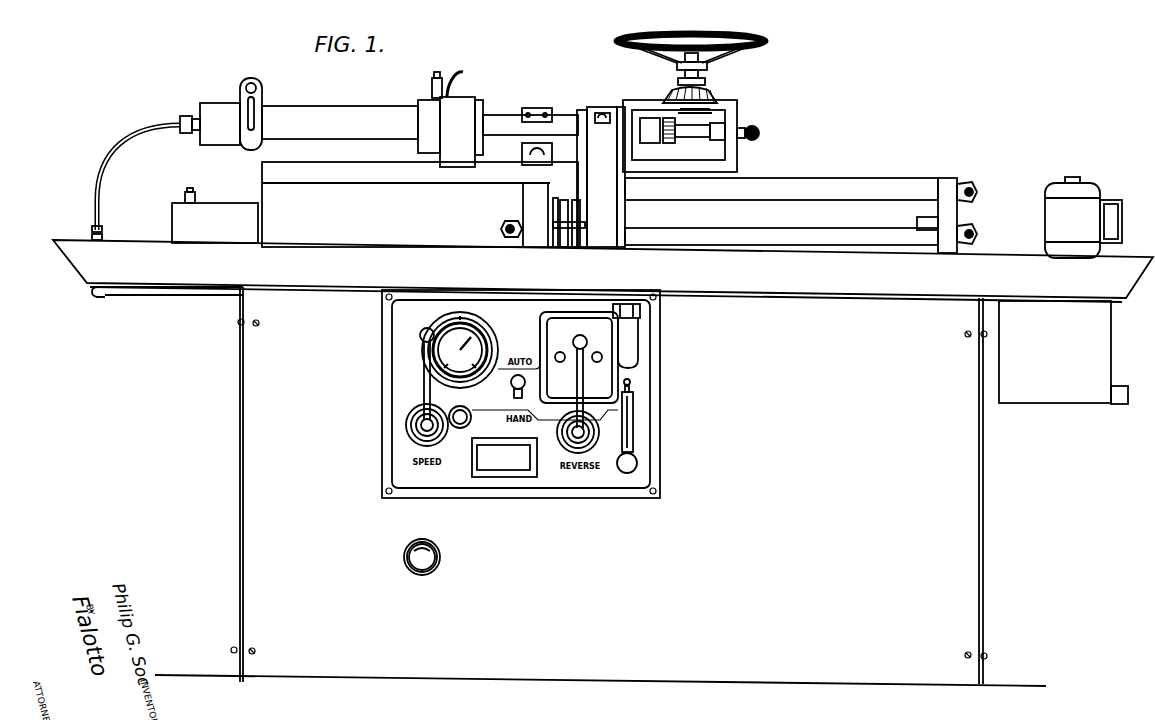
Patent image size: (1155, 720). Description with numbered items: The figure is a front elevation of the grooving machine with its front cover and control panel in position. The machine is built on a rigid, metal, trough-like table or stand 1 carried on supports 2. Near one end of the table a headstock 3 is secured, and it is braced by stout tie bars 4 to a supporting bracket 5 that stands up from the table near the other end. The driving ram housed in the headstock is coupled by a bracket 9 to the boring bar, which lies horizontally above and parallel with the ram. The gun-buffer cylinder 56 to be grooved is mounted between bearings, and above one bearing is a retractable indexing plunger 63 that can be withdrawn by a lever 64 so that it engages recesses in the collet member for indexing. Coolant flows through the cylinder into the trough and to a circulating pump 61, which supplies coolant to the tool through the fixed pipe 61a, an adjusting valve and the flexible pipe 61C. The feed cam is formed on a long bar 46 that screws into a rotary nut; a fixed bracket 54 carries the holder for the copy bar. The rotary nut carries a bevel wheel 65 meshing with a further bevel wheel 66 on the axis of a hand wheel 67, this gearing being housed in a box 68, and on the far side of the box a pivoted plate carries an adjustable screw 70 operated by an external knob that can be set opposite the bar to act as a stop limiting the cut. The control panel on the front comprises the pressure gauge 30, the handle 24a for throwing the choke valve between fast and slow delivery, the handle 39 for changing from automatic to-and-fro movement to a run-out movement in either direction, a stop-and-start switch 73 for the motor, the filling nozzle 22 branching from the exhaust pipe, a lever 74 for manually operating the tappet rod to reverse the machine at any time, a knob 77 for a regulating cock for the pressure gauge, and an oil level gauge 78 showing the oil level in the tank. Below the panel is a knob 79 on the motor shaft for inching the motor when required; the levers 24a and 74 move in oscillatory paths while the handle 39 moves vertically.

The trough-like table or stand 1 is at (603, 271).
The supports 2 is at (238, 556).
The headstock 3 is at (378, 204).
The tie bars 4 is at (820, 186).
The supporting bracket 5 is at (958, 213).
The bracket 9 is at (601, 177).
The filling nozzle 22 is at (629, 345).
The handle 24a is at (423, 333).
The pressure gauge 30 is at (486, 337).
The handle 39 is at (511, 384).
The long bar 46 is at (694, 138).
The fixed bracket 54 is at (537, 108).
The gun-buffer cylinder 56 is at (379, 122).
The circulating pump 61 is at (1083, 217).
The fixed pipe 61a is at (178, 296).
The flexible pipe 61C is at (136, 179).
The retractable indexing plunger 63 is at (432, 76).
The lever 64 is at (459, 74).
The bevel wheel 65 is at (670, 143).
The bevel wheel 66 is at (700, 106).
The hand wheel 67 is at (764, 45).
The box 68 is at (737, 110).
The adjustable screw 70 is at (760, 134).
The stop-and-start switch 73 is at (579, 382).
The lever 74 is at (583, 336).
The knob 77 is at (471, 418).
The oil level gauge 78 is at (634, 421).
The knob 79 is at (440, 557).